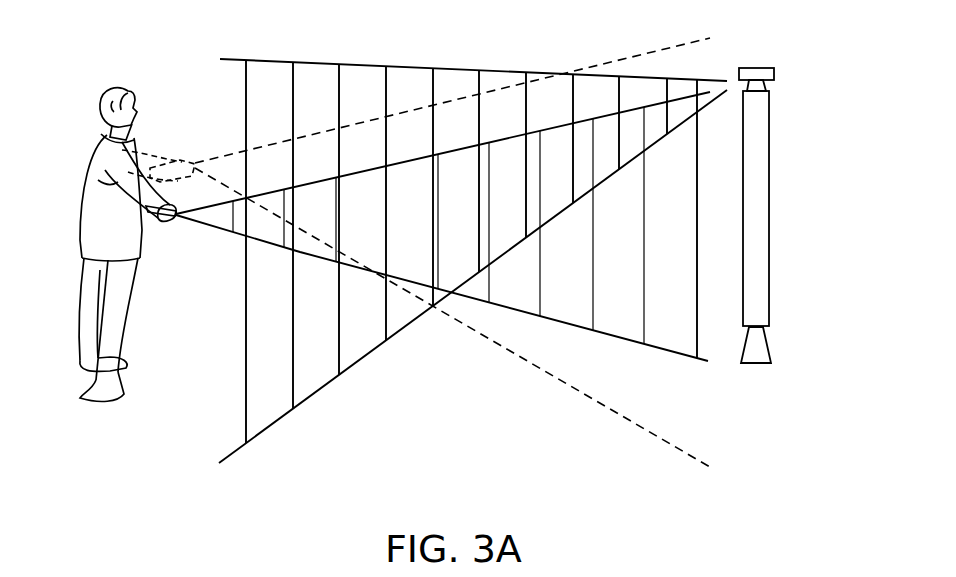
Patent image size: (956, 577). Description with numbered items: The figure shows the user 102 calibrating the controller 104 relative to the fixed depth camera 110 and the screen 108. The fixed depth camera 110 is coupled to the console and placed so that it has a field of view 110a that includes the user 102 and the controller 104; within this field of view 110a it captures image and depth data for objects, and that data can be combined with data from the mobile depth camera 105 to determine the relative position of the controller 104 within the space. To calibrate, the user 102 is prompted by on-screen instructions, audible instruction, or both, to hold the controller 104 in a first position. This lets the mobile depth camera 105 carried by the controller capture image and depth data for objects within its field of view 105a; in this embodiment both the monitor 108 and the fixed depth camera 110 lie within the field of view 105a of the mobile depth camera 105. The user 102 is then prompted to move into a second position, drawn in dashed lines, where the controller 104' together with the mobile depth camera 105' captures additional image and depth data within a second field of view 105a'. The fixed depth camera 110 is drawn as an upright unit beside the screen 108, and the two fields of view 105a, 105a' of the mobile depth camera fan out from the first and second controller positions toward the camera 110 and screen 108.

The user 102 is at (120, 88).
The controller 104 is at (160, 222).
The controller in second position 104' is at (158, 137).
The mobile depth camera 105 is at (180, 218).
The mobile depth camera in second position 105' is at (452, 100).
The field of view of mobile depth camera 105a is at (673, 354).
The second field of view 105a' is at (452, 332).
The screen 108 is at (770, 142).
The fixed depth camera 110 is at (766, 68).
The field of view of fixed depth camera 110a is at (318, 393).